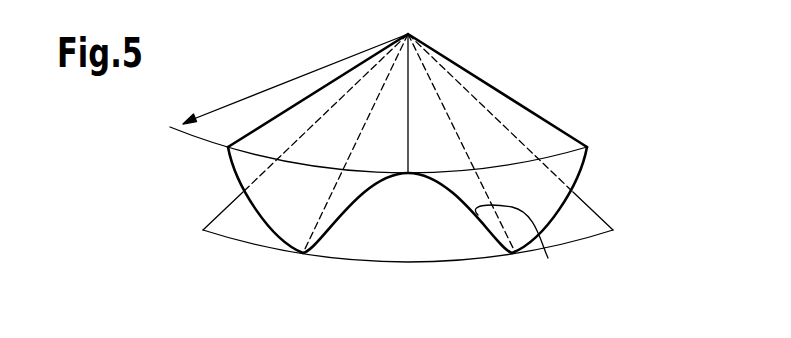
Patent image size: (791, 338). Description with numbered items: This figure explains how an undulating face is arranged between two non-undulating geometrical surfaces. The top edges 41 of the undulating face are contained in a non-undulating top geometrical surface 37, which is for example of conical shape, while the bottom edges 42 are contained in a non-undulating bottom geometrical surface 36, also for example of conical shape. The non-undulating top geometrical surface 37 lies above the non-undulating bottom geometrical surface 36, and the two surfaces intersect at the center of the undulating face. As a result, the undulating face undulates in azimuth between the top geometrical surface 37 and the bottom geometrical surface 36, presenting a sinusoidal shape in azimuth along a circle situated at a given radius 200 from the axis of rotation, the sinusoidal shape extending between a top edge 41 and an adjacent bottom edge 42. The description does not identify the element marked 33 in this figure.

The lobe 33 is at (548, 258).
The non-undulating bottom geometrical surface 36 is at (214, 234).
The non-undulating top geometrical surface 37 is at (327, 86).
The top edges 41 is at (257, 128).
The bottom edges 42 is at (316, 242).
The given radius 200 is at (378, 103).